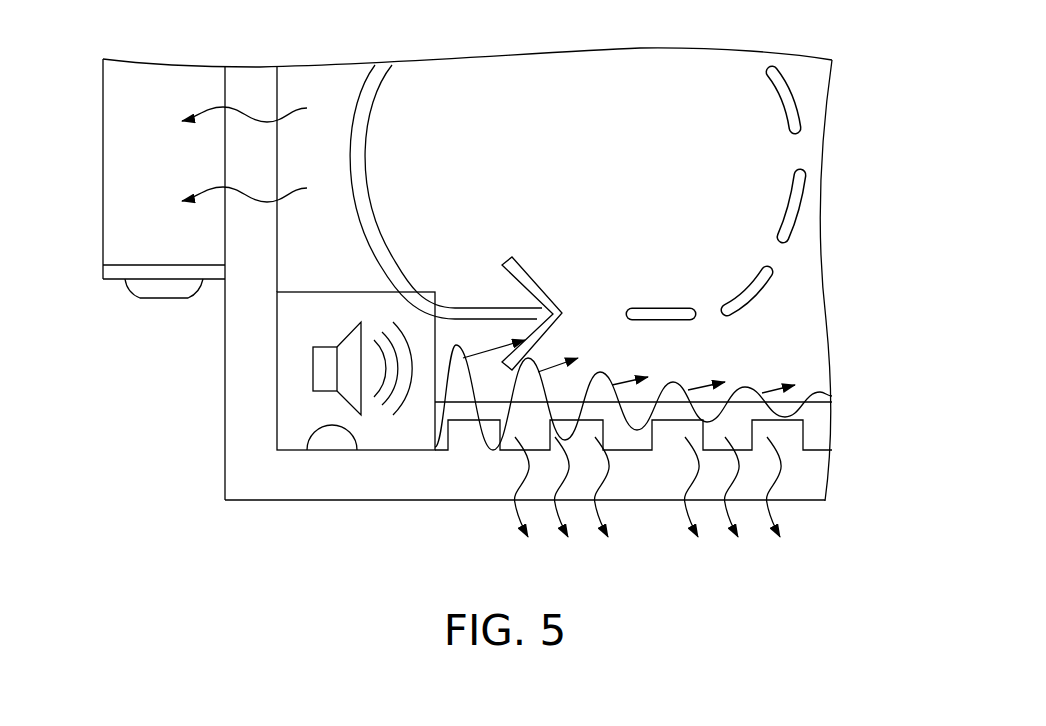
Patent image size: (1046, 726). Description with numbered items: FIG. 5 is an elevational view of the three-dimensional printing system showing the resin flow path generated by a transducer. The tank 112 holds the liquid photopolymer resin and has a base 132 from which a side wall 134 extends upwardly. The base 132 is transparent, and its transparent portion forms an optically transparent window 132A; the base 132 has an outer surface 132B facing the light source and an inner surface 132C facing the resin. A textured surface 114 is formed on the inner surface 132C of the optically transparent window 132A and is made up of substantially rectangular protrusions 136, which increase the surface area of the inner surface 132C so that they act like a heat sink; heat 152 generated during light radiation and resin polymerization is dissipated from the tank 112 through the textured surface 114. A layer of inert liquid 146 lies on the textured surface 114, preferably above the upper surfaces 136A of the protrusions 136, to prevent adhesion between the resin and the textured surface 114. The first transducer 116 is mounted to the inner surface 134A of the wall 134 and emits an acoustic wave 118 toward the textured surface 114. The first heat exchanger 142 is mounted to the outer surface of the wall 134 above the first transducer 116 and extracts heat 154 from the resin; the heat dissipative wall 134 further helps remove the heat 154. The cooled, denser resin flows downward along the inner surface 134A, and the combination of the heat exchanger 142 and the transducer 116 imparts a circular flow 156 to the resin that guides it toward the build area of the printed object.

The tank 112 is at (223, 388).
The textured surface 114 is at (655, 408).
The first transducer 116 is at (277, 425).
The acoustic wave 118 is at (593, 380).
The base 132 is at (499, 503).
The optically transparent window 132A is at (650, 503).
The outer surface 132B is at (295, 503).
The inner surface 132C is at (355, 450).
The side wall 134 is at (225, 337).
The inner surface 134A is at (277, 92).
The protrusions 136 is at (805, 437).
The upper surfaces 136A is at (798, 412).
The first heat exchanger 142 is at (103, 90).
The inert liquid 146 is at (793, 398).
The heat 152 is at (512, 510).
The heat 154 is at (205, 108).
The circular flow 156 is at (370, 225).